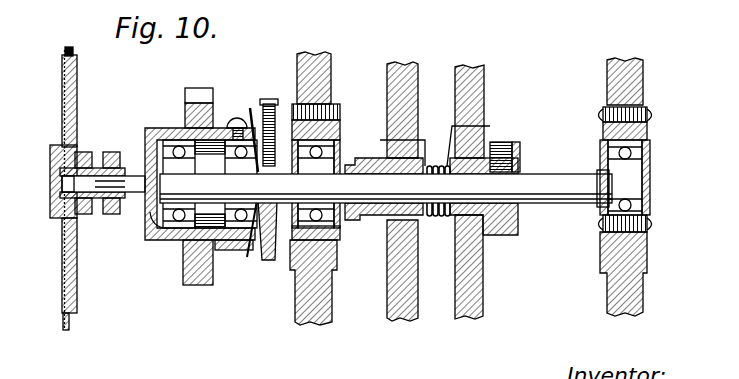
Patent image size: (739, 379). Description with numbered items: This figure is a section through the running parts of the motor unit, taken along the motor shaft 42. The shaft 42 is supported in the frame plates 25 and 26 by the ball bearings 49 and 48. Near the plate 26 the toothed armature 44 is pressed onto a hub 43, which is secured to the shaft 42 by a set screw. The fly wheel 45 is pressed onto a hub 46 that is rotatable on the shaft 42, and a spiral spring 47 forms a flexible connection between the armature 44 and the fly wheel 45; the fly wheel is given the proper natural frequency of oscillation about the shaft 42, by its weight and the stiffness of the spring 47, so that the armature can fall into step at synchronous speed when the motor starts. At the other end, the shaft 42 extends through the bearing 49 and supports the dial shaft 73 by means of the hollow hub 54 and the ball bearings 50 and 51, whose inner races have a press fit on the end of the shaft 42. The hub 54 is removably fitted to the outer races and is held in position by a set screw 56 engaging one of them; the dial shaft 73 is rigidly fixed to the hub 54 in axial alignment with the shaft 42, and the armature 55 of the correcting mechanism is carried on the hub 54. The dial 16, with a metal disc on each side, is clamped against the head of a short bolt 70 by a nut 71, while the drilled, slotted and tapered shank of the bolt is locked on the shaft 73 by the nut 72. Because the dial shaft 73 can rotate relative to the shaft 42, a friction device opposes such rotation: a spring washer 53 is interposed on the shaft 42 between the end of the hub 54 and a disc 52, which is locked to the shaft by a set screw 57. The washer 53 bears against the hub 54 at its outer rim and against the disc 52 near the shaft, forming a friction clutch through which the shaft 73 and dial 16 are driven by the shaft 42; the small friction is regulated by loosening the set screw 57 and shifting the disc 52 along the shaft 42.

The dial 16 is at (66, 50).
The short bolt 70 is at (45, 181).
The nut 71 is at (84, 152).
The nut 72 is at (115, 152).
The dial shaft 73 is at (137, 193).
The hollow hub 54 is at (152, 128).
The armature of the correcting mechanism 55 is at (186, 110).
The set screw 56 is at (237, 116).
The set screw 57 is at (275, 99).
The spring washer 53 is at (252, 108).
The ball bearing 51 is at (165, 242).
The ball bearing 50 is at (232, 250).
The disc 52 is at (268, 262).
The frame plate 25 is at (316, 323).
The ball bearing 49 is at (338, 145).
The hub 46 is at (363, 218).
The fly wheel 45 is at (413, 318).
The spiral spring 47 is at (436, 165).
The toothed armature 44 is at (485, 296).
The hub 43 is at (520, 220).
The shaft 42 is at (548, 180).
The frame plate 26 is at (610, 82).
The ball bearing 48 is at (652, 167).